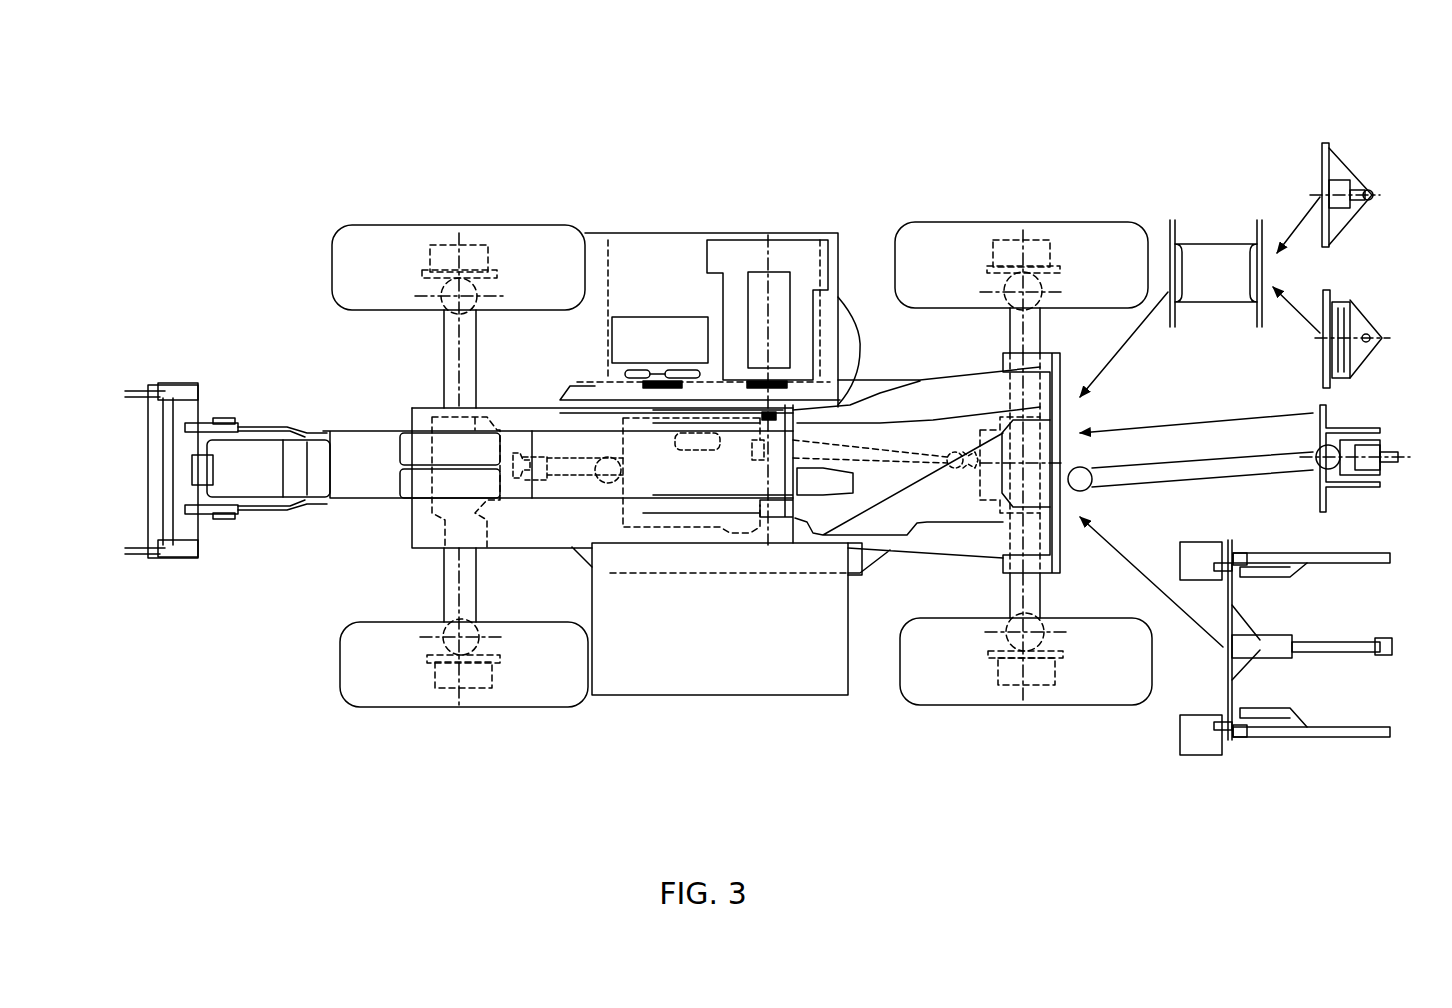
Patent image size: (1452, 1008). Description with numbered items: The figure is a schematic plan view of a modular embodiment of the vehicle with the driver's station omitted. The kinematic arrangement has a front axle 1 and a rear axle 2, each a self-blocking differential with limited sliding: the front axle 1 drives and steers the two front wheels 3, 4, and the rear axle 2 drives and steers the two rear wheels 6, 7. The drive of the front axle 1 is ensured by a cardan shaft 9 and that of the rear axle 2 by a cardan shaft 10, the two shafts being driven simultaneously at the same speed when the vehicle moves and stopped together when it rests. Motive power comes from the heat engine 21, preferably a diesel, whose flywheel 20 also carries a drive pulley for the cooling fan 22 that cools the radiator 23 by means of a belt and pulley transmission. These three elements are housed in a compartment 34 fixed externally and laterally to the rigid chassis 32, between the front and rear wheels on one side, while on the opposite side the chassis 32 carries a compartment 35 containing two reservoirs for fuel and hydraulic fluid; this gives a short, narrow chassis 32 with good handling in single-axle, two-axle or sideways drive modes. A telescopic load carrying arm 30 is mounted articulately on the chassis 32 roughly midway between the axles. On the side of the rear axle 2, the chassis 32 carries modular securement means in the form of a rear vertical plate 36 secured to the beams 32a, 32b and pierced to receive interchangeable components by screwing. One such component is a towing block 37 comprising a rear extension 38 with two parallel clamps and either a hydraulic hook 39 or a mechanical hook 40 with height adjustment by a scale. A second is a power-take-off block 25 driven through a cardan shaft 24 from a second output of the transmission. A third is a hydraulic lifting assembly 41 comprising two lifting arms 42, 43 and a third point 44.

The front axle 1 is at (383, 340).
The rear axle 2 is at (990, 325).
The front wheel 3 is at (440, 215).
The front wheel 4 is at (445, 713).
The rear wheel 6 is at (1043, 713).
The rear wheel 7 is at (1050, 217).
The cardan shaft 9 is at (558, 447).
The cardan shaft 10 is at (885, 453).
The flywheel 20 is at (815, 383).
The heat engine 21 is at (768, 400).
The cooling fan 22 is at (690, 362).
The radiator 23 is at (632, 323).
The cardan shaft 24 is at (1160, 453).
The power-take-off block 25 is at (1383, 392).
The telescopic load carrying arm 30 is at (273, 412).
The rigid chassis 32 is at (392, 545).
The beam 32a is at (950, 400).
The beam 32b is at (922, 542).
The compartment 34 is at (677, 217).
The compartment 35 is at (683, 707).
The rear vertical plate 36 is at (1067, 357).
The towing block 37 is at (1240, 222).
The rear extension 38 is at (1190, 240).
The hydraulic hook 39 is at (1345, 157).
The mechanical hook 40 is at (1377, 300).
The hydraulic lifting assembly 41 is at (1248, 747).
The lifting arm 42 is at (1367, 558).
The lifting arm 43 is at (1288, 737).
The third point 44 is at (1345, 643).